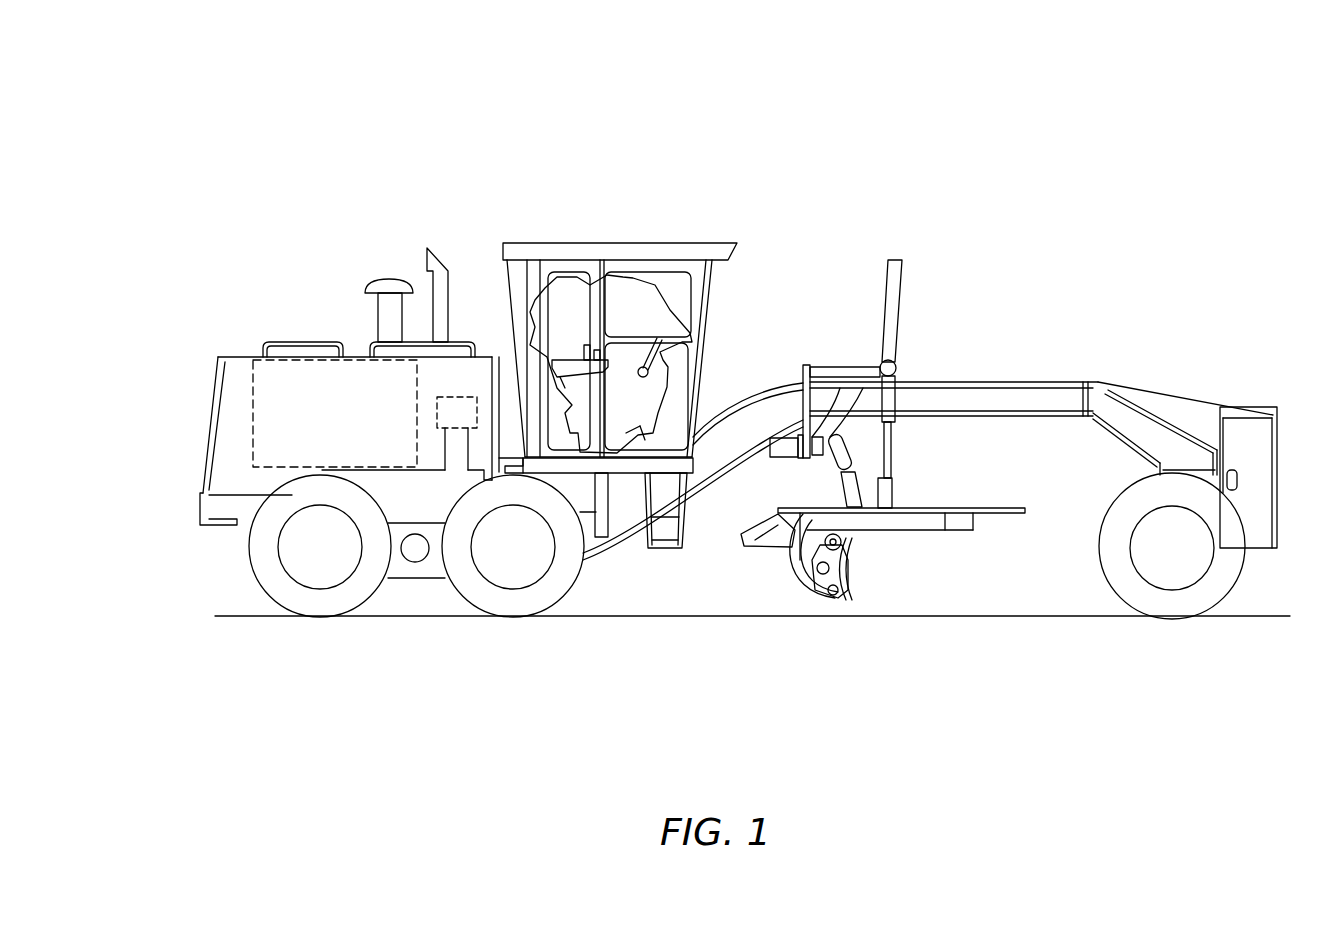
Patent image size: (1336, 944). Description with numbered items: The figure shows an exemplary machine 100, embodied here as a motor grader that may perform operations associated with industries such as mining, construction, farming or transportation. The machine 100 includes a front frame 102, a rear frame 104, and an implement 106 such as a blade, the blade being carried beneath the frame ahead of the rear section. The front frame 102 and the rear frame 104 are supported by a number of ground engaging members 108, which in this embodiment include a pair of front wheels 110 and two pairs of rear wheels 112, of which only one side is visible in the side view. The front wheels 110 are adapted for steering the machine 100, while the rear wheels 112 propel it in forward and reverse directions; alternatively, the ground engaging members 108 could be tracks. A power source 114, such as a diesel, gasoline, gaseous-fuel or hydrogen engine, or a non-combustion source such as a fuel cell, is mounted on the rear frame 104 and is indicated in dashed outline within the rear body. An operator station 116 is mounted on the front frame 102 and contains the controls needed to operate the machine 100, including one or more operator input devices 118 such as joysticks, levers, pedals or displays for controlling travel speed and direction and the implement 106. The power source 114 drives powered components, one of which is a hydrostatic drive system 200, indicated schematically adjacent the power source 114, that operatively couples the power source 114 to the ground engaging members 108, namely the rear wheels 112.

The machine 100 is at (210, 137).
The front frame 102 is at (1265, 660).
The rear frame 104 is at (513, 660).
The implement 106 is at (847, 577).
The ground engaging members 108 is at (186, 570).
The front wheels 110 is at (1098, 558).
The rear wheels 112 is at (249, 561).
The power source 114 is at (343, 423).
The operator station 116 is at (627, 243).
The operator input devices 118 is at (645, 350).
The hydrostatic drive system 200 is at (472, 423).